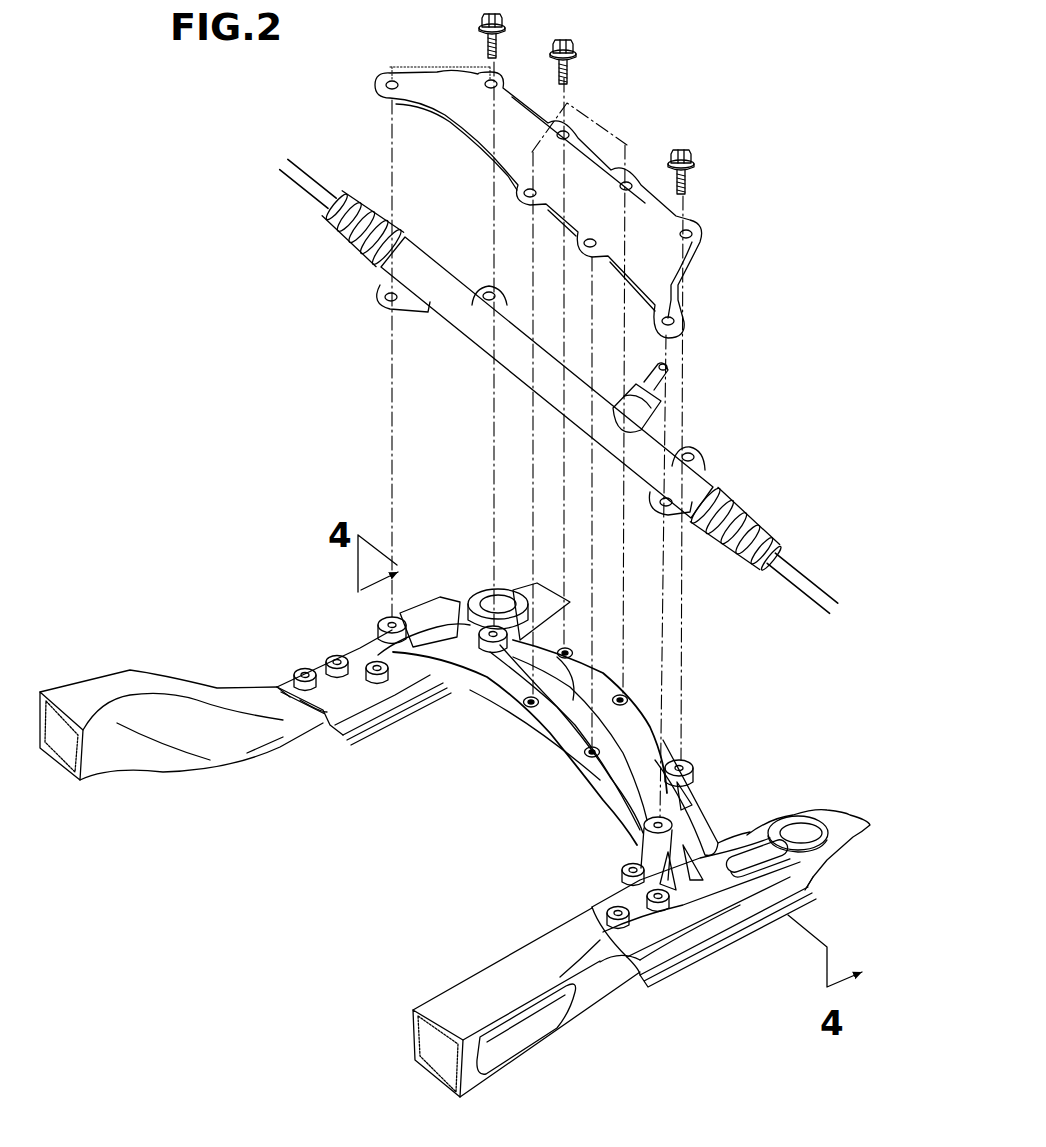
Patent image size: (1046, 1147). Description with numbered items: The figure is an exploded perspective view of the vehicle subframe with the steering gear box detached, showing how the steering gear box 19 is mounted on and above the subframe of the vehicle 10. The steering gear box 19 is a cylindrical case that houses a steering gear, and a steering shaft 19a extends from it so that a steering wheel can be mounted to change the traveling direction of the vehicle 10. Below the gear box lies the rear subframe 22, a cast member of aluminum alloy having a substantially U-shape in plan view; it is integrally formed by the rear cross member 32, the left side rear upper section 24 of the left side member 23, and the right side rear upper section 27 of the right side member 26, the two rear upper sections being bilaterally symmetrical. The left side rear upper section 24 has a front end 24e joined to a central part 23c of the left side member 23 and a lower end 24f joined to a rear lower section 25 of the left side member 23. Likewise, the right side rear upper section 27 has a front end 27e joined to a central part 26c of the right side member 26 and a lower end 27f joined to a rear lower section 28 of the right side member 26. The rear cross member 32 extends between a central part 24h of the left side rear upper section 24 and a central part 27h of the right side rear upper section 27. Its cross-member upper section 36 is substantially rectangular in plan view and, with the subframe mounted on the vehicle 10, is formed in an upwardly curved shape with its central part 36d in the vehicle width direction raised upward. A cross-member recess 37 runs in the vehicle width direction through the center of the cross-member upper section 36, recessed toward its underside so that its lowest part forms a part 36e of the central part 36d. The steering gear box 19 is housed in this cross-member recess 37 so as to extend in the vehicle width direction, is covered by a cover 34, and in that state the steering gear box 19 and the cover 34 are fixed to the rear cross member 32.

The vehicle 10 is at (215, 230).
The steering gear box 19 is at (437, 270).
The steering shaft 19a is at (666, 388).
The rear subframe 22 is at (340, 647).
The left side member 23 is at (503, 967).
The central part of left side member 23c is at (588, 910).
The left side rear upper section 24 is at (687, 903).
The front end of left side rear upper section 24e is at (627, 940).
The lower end of left side rear upper section 24f is at (680, 950).
The central part of left side rear upper section 24h is at (793, 903).
The rear lower section of left side member 25 is at (755, 927).
The right side member 26 is at (140, 683).
The central part of right side member 26c is at (287, 697).
The right side rear upper section 27 is at (345, 690).
The front end of right side rear upper section 27e is at (300, 705).
The lower end of right side rear upper section 27f is at (407, 700).
The central part of right side rear upper section 27h is at (363, 647).
The rear lower section of right side member 28 is at (448, 693).
The rear cross member 32 is at (643, 712).
The cover 34 is at (573, 178).
The cross-member upper section 36 is at (653, 740).
The central part of cross-member upper section 36d is at (565, 728).
The lowest part of cross-member recess 36e is at (632, 790).
The cross-member recess 37 is at (575, 700).